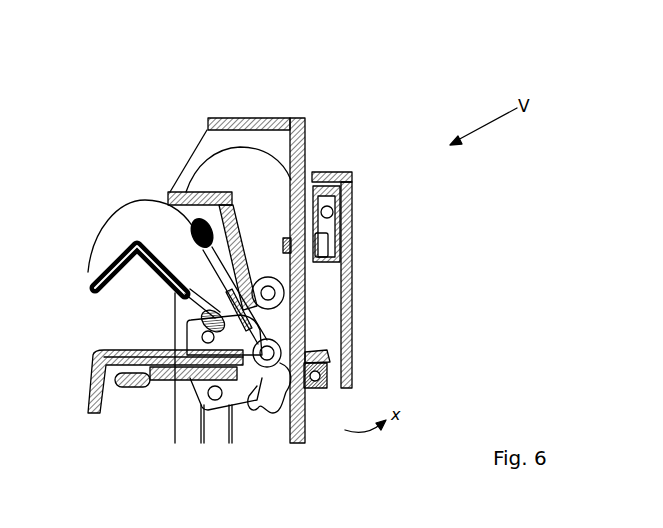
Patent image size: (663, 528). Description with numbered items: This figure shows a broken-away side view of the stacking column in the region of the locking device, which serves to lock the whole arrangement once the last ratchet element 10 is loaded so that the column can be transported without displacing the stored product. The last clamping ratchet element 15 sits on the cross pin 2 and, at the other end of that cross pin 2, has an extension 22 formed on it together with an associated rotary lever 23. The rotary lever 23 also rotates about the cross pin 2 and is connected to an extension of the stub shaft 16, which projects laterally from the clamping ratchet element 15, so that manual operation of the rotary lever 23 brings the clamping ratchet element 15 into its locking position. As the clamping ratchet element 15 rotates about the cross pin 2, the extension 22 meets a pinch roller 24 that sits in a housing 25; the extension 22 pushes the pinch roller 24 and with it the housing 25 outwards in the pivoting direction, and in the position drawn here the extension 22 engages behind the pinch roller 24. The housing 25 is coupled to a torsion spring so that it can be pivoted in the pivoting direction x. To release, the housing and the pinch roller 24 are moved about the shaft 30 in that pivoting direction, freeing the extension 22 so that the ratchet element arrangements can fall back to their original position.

The cross pin 2 is at (278, 350).
The ratchet element 10 is at (162, 384).
The clamping ratchet element 15 is at (233, 207).
The stub shaft 16 is at (282, 288).
The extension 22 is at (328, 357).
The rotary lever 23 is at (241, 148).
The pinch roller 24 is at (328, 377).
The housing 25 is at (354, 168).
The shaft 30 is at (324, 212).